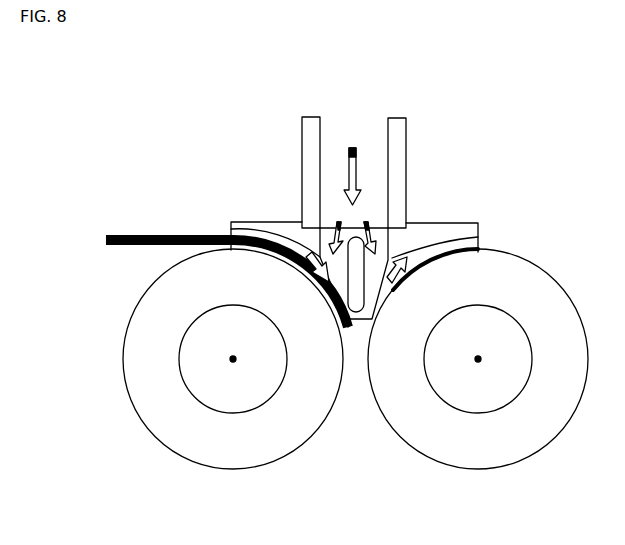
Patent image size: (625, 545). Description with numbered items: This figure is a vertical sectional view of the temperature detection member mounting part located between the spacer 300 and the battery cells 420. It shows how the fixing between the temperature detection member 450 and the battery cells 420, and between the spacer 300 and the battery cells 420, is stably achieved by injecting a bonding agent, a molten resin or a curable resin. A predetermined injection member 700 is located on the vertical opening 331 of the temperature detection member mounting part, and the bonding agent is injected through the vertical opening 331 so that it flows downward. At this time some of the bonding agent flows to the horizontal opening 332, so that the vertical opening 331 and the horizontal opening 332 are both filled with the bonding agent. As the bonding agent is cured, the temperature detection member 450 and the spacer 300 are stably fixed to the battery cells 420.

The spacer 300 is at (341, 197).
The vertical opening 331 is at (345, 123).
The horizontal opening 332 is at (218, 229).
The battery cells 420 is at (392, 436).
The temperature detection member 450 is at (107, 233).
The injection member 700 is at (407, 136).